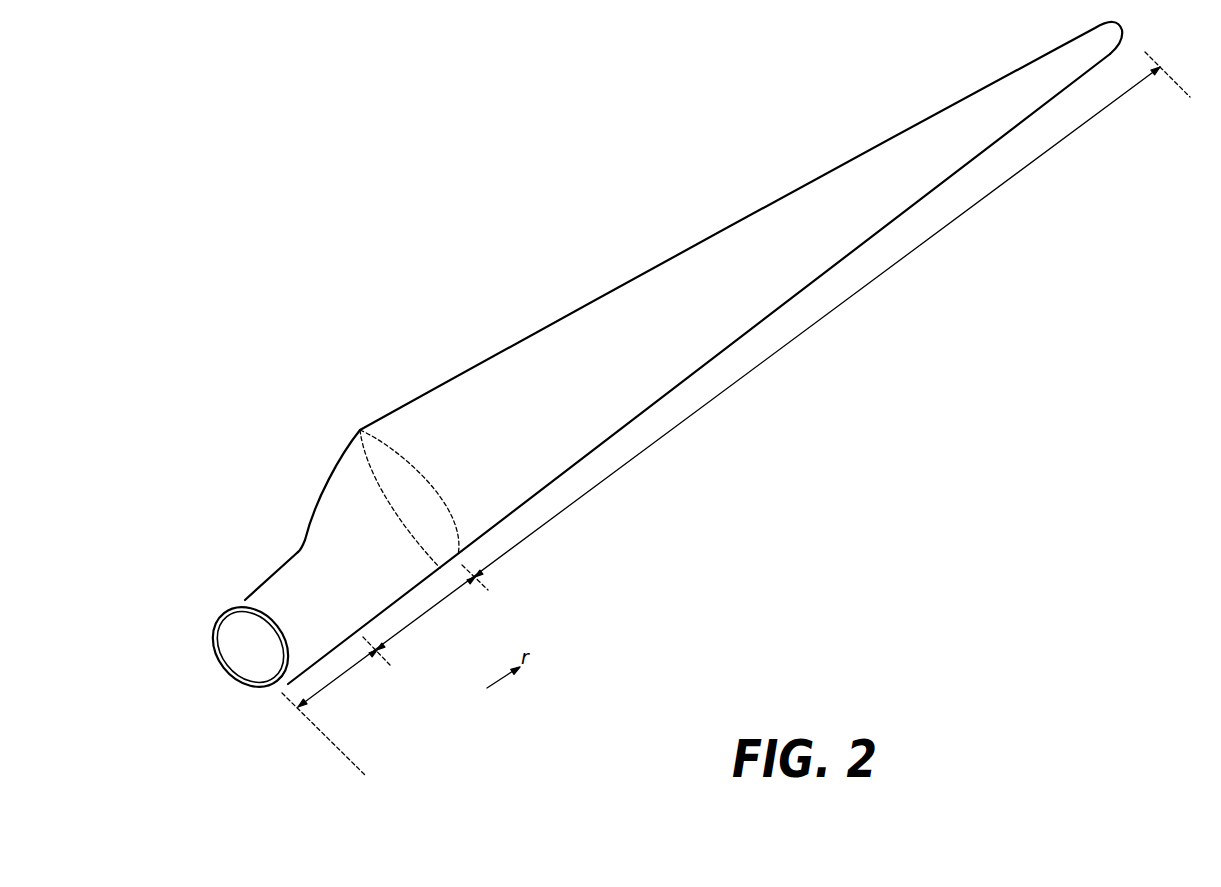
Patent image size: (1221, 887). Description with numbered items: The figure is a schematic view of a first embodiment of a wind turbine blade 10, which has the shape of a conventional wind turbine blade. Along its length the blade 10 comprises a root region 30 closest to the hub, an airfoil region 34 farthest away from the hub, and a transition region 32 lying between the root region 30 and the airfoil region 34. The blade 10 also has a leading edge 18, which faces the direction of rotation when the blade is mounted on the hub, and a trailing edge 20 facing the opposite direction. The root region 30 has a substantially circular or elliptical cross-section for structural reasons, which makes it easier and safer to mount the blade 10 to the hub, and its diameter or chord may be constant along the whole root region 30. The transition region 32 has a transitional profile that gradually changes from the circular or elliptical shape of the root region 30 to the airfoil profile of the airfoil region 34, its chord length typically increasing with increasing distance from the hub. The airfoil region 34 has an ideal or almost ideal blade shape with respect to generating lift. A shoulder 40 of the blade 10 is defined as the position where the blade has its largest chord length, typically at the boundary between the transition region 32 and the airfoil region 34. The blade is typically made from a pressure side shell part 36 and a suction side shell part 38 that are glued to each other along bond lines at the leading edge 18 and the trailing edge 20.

The wind turbine blade 10 is at (658, 362).
The leading edge 18 is at (847, 256).
The trailing edge 20 is at (675, 257).
The root region 30 is at (340, 673).
The transition region 32 is at (430, 612).
The airfoil region 34 is at (748, 373).
The pressure side shell part 36 is at (247, 600).
The suction side shell part 38 is at (218, 611).
The shoulder 40 is at (360, 430).